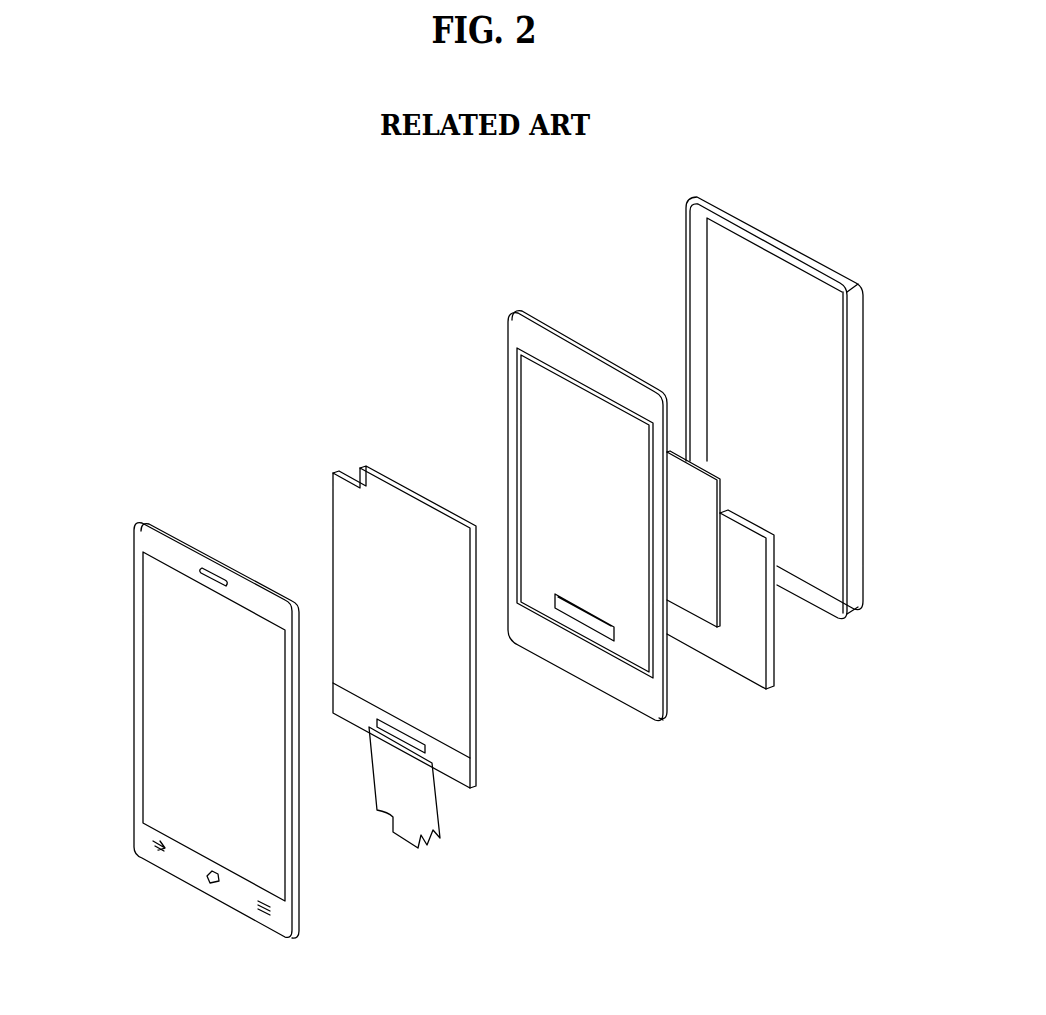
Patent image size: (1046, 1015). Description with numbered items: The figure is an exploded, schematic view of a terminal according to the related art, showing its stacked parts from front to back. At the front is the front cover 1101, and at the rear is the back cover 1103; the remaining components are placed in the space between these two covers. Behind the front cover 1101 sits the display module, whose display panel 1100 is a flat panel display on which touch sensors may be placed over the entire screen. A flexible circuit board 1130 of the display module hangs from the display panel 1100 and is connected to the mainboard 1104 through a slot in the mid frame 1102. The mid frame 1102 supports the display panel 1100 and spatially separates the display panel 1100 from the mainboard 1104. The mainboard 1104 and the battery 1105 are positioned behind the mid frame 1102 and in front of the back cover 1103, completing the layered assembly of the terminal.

The display panel 1100 is at (463, 772).
The front cover 1101 is at (143, 833).
The mid frame 1102 is at (635, 702).
The back cover 1103 is at (857, 517).
The mainboard 1104 is at (698, 602).
The battery 1105 is at (774, 662).
The flexible circuit board 1130 is at (428, 812).